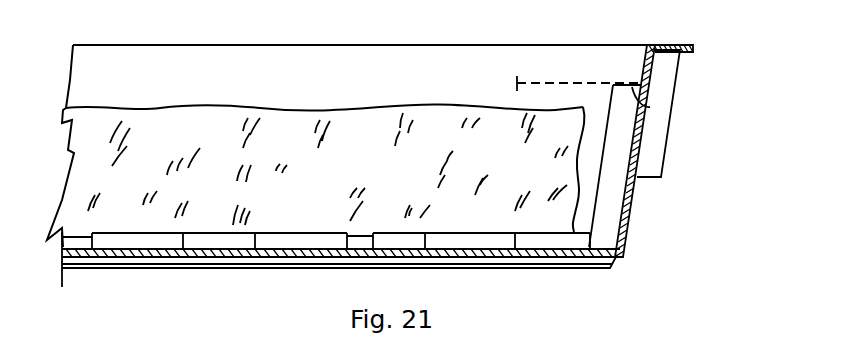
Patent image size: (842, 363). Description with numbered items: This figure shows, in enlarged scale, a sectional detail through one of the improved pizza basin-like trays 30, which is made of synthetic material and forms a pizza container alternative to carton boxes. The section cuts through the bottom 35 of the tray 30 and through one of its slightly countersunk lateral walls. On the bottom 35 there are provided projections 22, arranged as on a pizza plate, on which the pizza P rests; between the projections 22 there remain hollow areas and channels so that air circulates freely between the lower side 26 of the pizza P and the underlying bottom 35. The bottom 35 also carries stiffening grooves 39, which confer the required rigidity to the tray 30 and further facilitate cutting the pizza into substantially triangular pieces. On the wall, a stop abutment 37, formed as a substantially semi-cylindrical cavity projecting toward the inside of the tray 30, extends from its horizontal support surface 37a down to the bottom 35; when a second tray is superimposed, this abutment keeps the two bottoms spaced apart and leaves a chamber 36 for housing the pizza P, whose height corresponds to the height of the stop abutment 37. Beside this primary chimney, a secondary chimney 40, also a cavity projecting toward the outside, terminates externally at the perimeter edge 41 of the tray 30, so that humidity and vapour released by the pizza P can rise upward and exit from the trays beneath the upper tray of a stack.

The pizza P is at (168, 127).
The projections 22 is at (157, 243).
The lower side 26 is at (377, 237).
The bottom 35 is at (570, 252).
The stiffening grooves 39 is at (257, 263).
The basin-like tray 30 is at (640, 213).
The perimeter edge 41 is at (666, 46).
The secondary chimney 40 is at (668, 137).
The stop abutment 37 is at (612, 235).
The horizontal support surface 37a is at (650, 107).
The chamber 36 is at (587, 157).